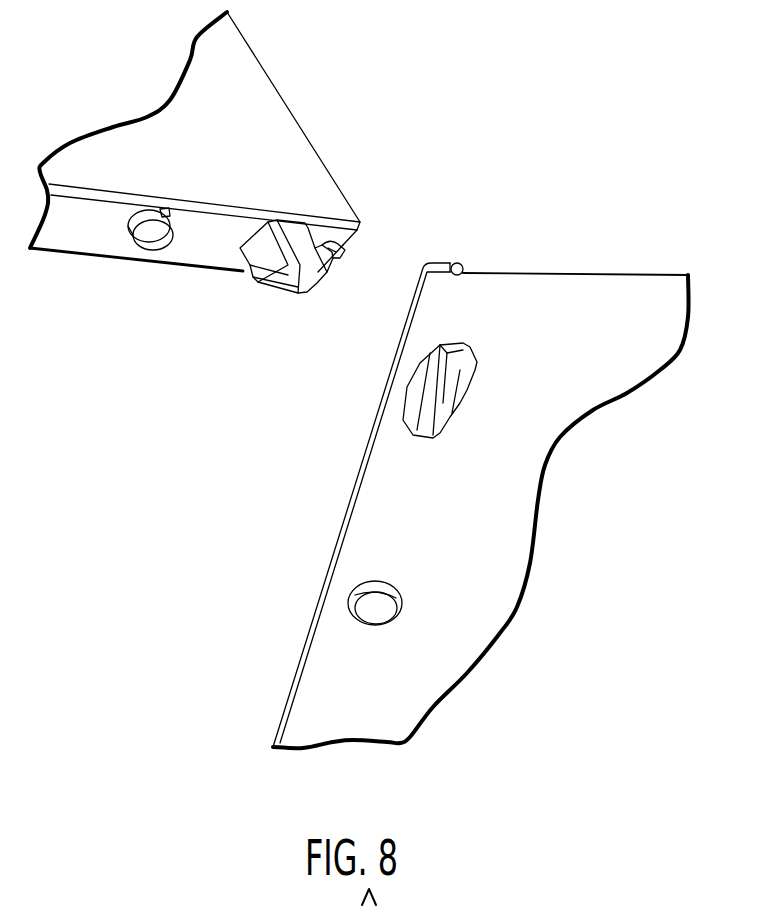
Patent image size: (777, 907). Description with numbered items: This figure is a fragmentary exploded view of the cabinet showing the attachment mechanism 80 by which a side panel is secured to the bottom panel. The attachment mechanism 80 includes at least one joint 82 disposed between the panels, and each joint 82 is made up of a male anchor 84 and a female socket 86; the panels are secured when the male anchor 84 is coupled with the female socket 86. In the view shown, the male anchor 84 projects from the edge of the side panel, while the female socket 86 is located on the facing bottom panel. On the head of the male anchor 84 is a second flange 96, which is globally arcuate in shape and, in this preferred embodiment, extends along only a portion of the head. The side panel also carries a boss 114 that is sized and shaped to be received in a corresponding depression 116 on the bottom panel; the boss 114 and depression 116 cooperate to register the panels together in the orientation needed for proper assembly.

The attachment mechanism 80 is at (205, 465).
The joint 82 is at (393, 210).
The male anchor 84 is at (267, 255).
The female socket 86 is at (453, 397).
The second flange 96 is at (333, 250).
The boss 114 is at (148, 245).
The depression 116 is at (380, 610).